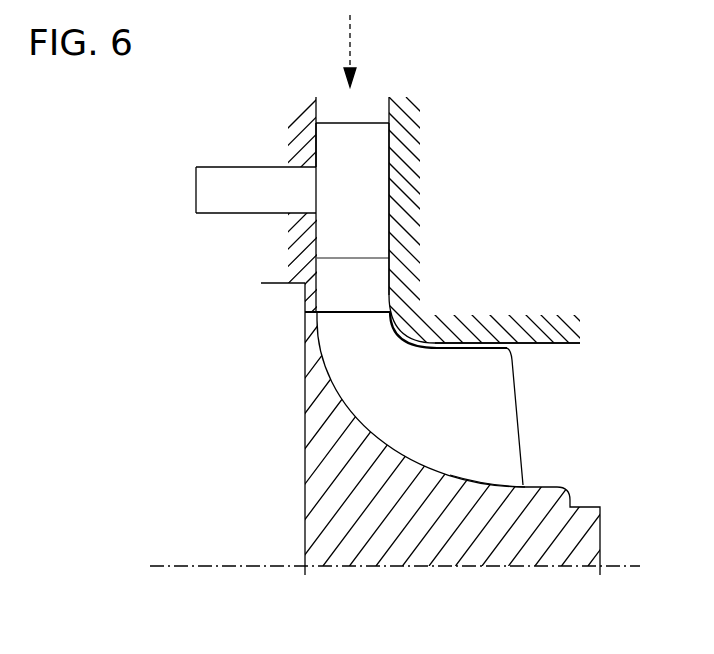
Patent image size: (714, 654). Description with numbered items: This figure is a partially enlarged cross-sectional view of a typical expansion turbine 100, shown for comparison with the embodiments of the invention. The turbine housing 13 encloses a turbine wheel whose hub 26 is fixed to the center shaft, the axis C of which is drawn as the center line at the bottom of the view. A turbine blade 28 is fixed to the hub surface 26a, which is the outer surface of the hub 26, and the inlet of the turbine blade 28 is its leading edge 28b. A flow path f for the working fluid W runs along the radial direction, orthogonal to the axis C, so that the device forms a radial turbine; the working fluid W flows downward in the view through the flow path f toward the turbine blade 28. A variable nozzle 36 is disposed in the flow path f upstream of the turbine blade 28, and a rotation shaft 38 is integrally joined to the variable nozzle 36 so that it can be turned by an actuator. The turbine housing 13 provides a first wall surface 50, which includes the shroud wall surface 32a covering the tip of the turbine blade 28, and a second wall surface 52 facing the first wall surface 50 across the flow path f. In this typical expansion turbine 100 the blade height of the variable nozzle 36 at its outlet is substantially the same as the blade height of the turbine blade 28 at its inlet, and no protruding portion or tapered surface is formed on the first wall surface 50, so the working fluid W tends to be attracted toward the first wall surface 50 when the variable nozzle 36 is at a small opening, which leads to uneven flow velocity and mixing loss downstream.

The turbine housing 13 is at (423, 135).
The hub 26 is at (496, 540).
The hub surface 26a is at (480, 478).
The turbine blade 28 is at (482, 400).
The leading edge 28b is at (318, 312).
The shroud wall surface 32a is at (475, 351).
The variable nozzle 36 is at (340, 146).
The rotation shaft 38 is at (218, 176).
The first wall surface 50 is at (391, 192).
The second wall surface 52 is at (310, 152).
The typical expansion turbine 100 is at (483, 236).
The working fluid W is at (348, 43).
The flow path f is at (373, 110).
The axis C is at (606, 562).